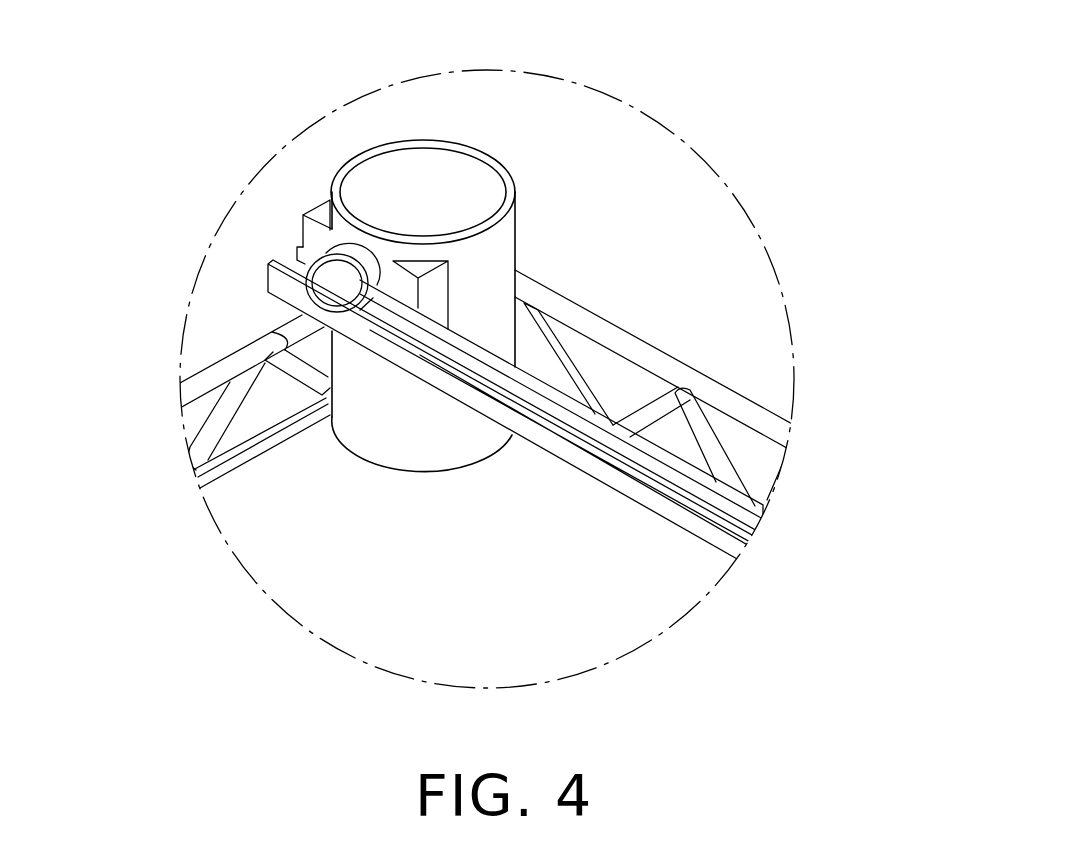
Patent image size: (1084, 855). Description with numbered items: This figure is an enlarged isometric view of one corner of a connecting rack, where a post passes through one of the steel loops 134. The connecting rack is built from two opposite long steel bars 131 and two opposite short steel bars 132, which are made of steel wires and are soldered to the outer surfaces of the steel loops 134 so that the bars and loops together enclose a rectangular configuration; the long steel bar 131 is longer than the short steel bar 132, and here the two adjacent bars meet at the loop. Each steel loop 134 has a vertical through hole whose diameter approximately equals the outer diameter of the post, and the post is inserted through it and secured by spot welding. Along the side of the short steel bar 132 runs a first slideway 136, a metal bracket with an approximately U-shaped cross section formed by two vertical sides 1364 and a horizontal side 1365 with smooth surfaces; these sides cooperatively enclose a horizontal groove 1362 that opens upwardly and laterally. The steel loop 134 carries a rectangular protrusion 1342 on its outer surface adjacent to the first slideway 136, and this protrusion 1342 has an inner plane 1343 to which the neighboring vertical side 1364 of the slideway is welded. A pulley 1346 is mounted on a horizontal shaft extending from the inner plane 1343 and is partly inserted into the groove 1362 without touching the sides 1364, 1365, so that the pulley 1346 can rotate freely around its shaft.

The long steel bar 131 is at (220, 368).
The short steel bar 132 is at (707, 395).
The steel loop 134 is at (493, 252).
The first slideway 136 is at (668, 508).
The horizontal groove 1362 is at (563, 418).
The rectangular protrusion 1342 is at (318, 229).
The inner plane 1343 is at (393, 280).
The pulley 1346 is at (328, 274).
The vertical side 1364 is at (303, 250).
The horizontal side 1365 is at (306, 262).